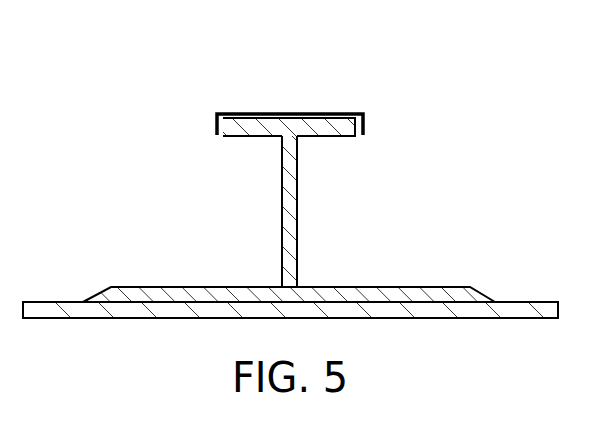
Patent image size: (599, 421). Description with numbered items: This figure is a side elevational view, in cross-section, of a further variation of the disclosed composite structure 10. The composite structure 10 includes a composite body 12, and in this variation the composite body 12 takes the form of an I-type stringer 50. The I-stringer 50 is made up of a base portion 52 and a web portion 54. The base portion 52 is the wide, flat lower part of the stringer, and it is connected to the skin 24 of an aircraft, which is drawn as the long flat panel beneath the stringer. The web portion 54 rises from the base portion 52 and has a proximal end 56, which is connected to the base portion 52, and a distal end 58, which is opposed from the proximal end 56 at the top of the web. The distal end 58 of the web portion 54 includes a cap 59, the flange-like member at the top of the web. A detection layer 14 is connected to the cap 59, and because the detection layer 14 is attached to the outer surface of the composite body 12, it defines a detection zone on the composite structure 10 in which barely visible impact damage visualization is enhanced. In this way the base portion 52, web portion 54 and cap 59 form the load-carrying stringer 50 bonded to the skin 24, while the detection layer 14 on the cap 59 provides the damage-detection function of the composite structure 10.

The composite structure 10 is at (497, 120).
The composite body 12 is at (297, 203).
The detection layer 14 is at (286, 114).
The skin 24 is at (522, 302).
The I-type stringer 50 is at (140, 202).
The base portion 52 is at (130, 287).
The web portion 54 is at (282, 185).
The proximal end 56 is at (307, 280).
The distal end 58 is at (375, 118).
The cap 59 is at (353, 136).